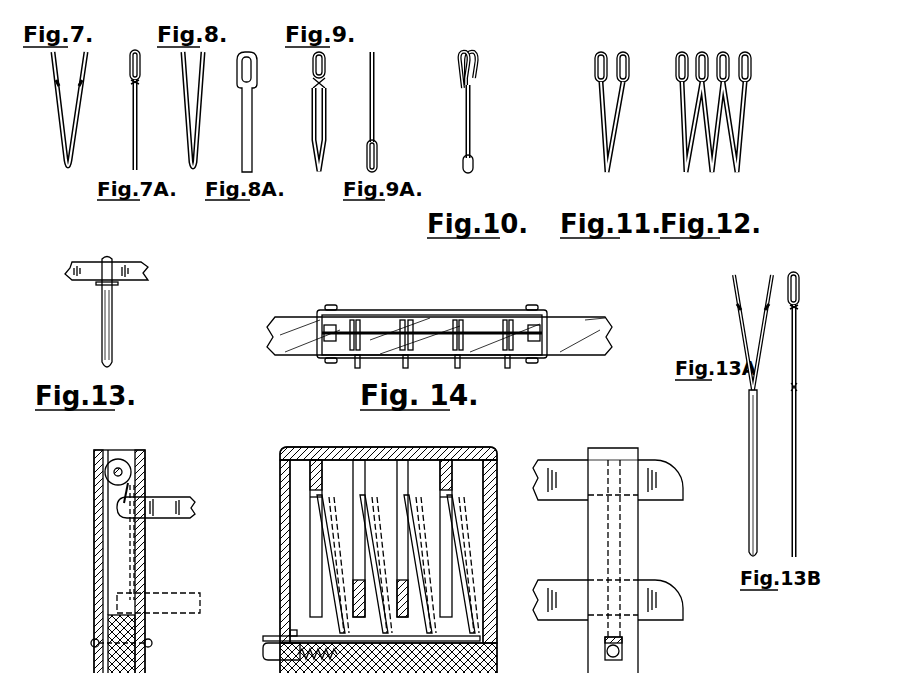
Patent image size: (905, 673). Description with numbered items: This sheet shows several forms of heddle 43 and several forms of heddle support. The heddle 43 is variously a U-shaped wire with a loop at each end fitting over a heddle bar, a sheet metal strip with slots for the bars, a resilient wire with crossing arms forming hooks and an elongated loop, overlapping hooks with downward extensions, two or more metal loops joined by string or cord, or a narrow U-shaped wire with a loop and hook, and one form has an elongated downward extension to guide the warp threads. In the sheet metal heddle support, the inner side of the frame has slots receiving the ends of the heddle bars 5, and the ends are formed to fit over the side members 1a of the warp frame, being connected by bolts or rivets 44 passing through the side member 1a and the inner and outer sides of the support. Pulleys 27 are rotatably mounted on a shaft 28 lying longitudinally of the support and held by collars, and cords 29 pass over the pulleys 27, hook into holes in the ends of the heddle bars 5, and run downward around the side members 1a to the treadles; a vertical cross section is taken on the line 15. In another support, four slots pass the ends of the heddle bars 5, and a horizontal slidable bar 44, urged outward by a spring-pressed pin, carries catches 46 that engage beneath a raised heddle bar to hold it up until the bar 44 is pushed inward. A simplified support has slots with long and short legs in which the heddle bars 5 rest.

In FIG. 7, the heddle 43 is at (79, 122).
In FIG. 7A, the heddle 43 is at (132, 143).
In FIG. 8, the heddle 43 is at (203, 125).
In FIG. 8A, the heddle 43 is at (242, 153).
In FIG. 9, the heddle 43 is at (326, 110).
In FIG. 9A, the heddle 43 is at (369, 142).
In FIG. 10, the heddle 43 is at (464, 118).
In FIG. 11, the heddle 43 is at (622, 115).
In FIG. 12, the heddle 43 is at (680, 101).
In FIG. 13, the heddle 43 is at (113, 323).
In FIG. 13A, the heddle 43 is at (749, 430).
In FIG. 13B, the heddle 43 is at (792, 440).
In FIG. 14, the bolts or rivets / slidable bar 44 is at (334, 306).
In FIG. 15, the bolts or rivets / slidable bar 44 is at (91, 643).
In FIG. 16, the bolts or rivets / slidable bar 44 is at (266, 636).
In FIG. 17, the bolts or rivets / slidable bar 44 is at (623, 648).
In FIG. 14, the cords 29 is at (362, 322).
In FIG. 15, the cords 29 is at (108, 528).
In FIG. 14, the pulleys 27 is at (412, 322).
In FIG. 15, the pulleys 27 is at (125, 466).
In FIG. 14, the shaft 28 is at (470, 331).
In FIG. 15, the shaft 28 is at (114, 472).
In FIG. 14, the heddle bars 5 is at (360, 366).
In FIG. 15, the heddle bars 5 is at (167, 497).
In FIG. 16, the heddle bars 5 is at (323, 480).
In FIG. 17, the heddle bars 5 is at (653, 582).
In FIG. 14, the section line 15— 15 is at (327, 375).
In FIG. 16, the catches 46 is at (325, 512).
In FIG. 15, the side members of the warp frame 1a is at (144, 561).